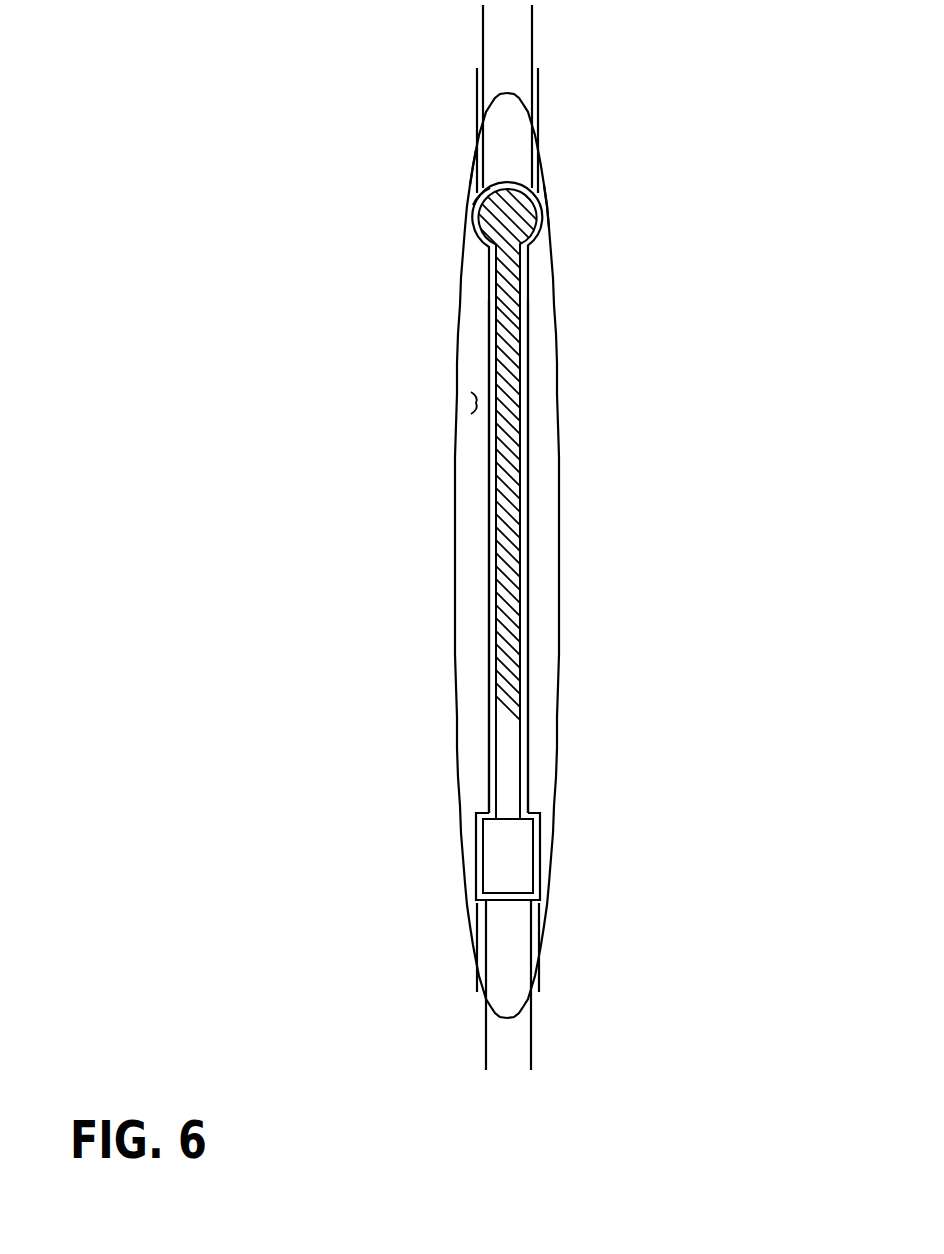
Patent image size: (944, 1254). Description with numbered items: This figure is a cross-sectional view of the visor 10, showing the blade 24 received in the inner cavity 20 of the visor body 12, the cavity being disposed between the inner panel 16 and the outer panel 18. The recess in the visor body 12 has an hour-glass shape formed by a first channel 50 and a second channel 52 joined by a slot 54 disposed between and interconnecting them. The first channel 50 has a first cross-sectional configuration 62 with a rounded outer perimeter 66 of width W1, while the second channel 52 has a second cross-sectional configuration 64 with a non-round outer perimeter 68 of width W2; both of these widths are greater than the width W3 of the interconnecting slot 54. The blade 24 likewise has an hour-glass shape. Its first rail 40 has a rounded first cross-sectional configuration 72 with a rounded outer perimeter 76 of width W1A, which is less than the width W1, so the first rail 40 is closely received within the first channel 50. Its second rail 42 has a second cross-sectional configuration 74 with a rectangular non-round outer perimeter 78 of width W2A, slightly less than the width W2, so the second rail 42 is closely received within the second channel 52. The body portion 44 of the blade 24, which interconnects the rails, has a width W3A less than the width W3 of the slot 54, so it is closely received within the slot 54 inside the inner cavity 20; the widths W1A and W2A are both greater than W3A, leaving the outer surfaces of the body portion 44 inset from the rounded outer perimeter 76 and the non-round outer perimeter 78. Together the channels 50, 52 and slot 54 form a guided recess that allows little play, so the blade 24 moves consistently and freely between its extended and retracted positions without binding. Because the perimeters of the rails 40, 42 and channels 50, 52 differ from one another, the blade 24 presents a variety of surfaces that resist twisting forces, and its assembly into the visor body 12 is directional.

The visor 10 is at (622, 331).
The visor body 12 is at (384, 537).
The inner panel 16 is at (455, 468).
The outer panel 18 is at (559, 487).
The inner cavity 20 is at (472, 403).
The blade 24 is at (509, 519).
The first rail 40 is at (543, 217).
The second rail 42 is at (518, 866).
The body portion 44 is at (521, 563).
The first channel 50 is at (484, 203).
The second channel 52 is at (482, 868).
The slot 54 is at (526, 460).
The first cross-sectional configuration 62 is at (480, 146).
The second cross-sectional configuration 64 is at (541, 914).
The rounded outer perimeter 66 is at (476, 189).
The non-round outer perimeter 68 is at (477, 828).
The rounded first cross-sectional configuration 72 is at (497, 235).
The second cross-sectional configuration 74 is at (496, 855).
The rounded outer perimeter 76 is at (541, 202).
The non-round outer perimeter 78 is at (534, 832).
The width of rounded outer perimeter of first rail W1A is at (481, 28).
The width of rounded outer perimeter of first channel W1 is at (475, 82).
The width of second cross-sectional configuration of second channel W2 is at (475, 976).
The width of non-round outer perimeter of second rail W2A is at (484, 1030).
The width of slot W3 is at (488, 668).
The width of body portion W3A is at (494, 622).